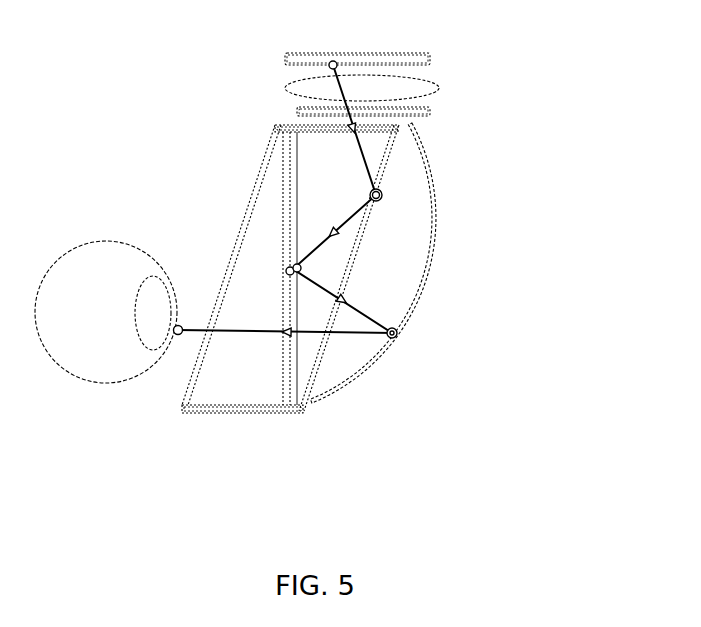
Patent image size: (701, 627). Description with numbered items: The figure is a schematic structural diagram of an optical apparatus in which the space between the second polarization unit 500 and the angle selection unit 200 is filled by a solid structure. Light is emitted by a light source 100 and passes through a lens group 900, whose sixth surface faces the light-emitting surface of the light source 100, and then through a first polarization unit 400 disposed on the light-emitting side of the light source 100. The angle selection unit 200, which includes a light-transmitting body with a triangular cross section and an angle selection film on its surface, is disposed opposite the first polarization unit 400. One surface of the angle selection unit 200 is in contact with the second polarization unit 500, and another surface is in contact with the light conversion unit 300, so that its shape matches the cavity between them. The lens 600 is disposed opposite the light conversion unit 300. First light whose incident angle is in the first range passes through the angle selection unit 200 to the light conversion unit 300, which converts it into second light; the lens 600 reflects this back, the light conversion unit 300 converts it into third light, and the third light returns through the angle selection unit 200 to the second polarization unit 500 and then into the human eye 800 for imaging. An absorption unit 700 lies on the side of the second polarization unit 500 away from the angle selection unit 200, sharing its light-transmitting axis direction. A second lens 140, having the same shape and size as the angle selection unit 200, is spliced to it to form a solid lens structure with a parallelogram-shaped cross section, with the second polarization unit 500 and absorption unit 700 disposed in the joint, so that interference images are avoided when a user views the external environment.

The light source 100 is at (412, 62).
The lens group 900 is at (428, 88).
The first polarization unit 400 is at (430, 112).
The lens 600 is at (428, 177).
The angle selection unit 200 is at (340, 242).
The light conversion unit 300 is at (348, 270).
The second lens 140 is at (228, 395).
The absorption unit 700 is at (283, 408).
The second polarization unit 500 is at (290, 409).
The human eye 800 is at (133, 250).